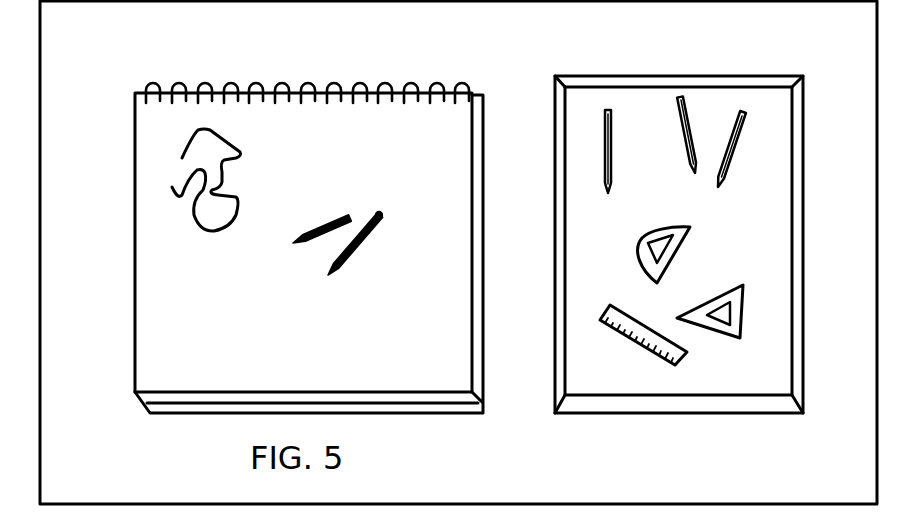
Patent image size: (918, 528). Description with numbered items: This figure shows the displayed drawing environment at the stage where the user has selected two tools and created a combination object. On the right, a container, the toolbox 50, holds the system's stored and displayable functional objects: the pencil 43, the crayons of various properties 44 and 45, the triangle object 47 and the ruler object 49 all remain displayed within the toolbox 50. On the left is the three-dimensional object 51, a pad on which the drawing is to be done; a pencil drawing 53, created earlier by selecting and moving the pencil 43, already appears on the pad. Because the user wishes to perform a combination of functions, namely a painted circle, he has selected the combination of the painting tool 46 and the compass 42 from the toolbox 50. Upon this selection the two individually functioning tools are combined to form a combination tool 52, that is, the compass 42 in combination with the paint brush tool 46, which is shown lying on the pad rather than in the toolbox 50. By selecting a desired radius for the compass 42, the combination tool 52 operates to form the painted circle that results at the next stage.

The compass 42 is at (378, 230).
The pencil 43 is at (608, 110).
The crayon 44 is at (687, 108).
The crayon 45 is at (745, 117).
The paint brush tipped object 46 is at (322, 220).
The triangle object 47 is at (733, 300).
The ruler object 49 is at (647, 347).
The toolbox 50 is at (715, 382).
The three-dimensional object 51 is at (292, 158).
The combination tool 52 is at (377, 213).
The pencil drawing 53 is at (222, 228).